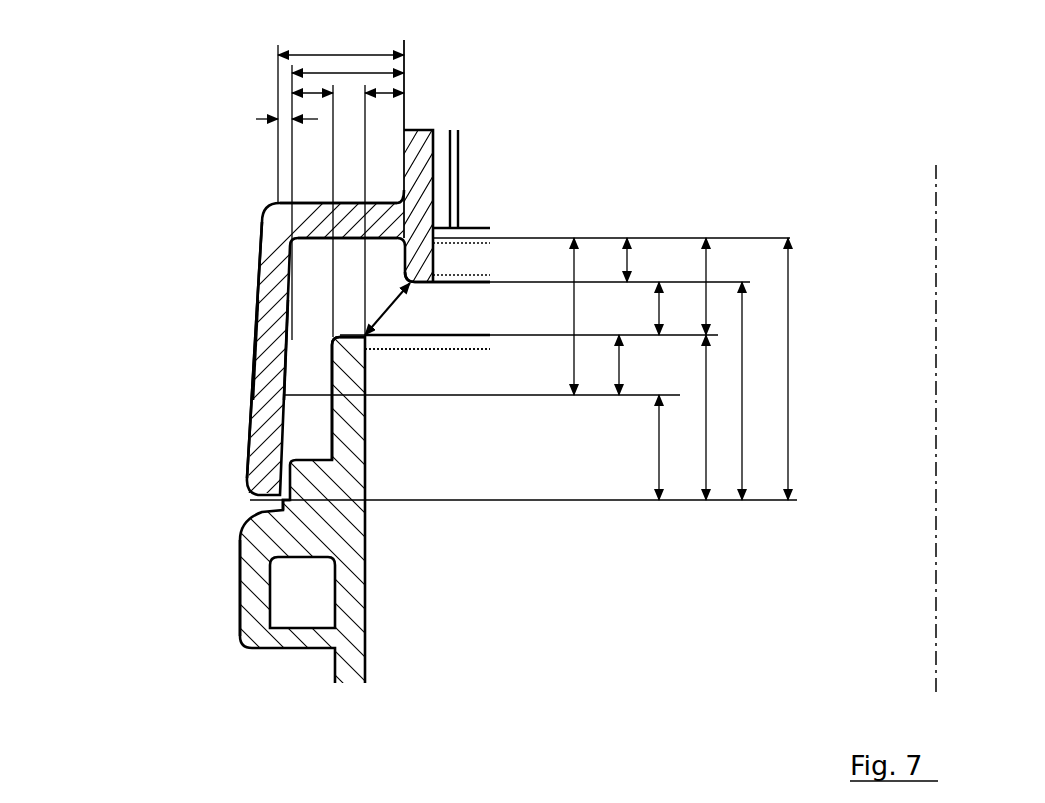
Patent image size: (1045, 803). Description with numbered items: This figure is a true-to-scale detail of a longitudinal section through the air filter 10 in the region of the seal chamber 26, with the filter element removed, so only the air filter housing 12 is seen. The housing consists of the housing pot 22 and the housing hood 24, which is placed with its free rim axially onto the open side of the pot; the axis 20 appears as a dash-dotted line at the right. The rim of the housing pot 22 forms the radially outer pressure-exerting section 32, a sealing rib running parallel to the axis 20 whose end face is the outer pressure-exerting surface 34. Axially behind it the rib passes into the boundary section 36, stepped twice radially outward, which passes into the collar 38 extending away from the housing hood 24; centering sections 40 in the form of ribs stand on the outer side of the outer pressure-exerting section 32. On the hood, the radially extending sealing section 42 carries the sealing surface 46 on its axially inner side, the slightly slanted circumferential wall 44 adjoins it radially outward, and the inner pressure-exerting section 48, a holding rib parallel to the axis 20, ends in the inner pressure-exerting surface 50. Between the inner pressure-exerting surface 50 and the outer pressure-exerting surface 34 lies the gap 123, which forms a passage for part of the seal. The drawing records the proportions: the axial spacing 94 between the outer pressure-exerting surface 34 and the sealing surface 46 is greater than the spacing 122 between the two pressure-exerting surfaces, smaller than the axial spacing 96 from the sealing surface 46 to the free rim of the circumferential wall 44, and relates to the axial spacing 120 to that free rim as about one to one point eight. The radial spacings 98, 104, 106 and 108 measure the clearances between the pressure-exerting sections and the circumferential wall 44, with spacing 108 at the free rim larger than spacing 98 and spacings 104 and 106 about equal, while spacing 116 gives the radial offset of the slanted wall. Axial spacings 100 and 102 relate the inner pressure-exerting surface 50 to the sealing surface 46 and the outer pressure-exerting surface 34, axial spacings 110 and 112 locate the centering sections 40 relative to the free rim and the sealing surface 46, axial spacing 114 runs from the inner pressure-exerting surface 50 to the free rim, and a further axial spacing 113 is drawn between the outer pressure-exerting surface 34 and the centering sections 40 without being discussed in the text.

The air filter 10 is at (88, 190).
The air filter housing 12 is at (250, 240).
The axis 20 is at (936, 650).
The housing pot 22 is at (347, 667).
The housing hood 24 is at (440, 165).
The seal chamber 26 is at (262, 329).
The outer pressure-exerting section 32 is at (340, 414).
The outer pressure-exerting surface 34 is at (352, 333).
The boundary section 36 is at (283, 500).
The collar 38 is at (253, 578).
The centering sections 40 is at (293, 428).
The sealing section 42 is at (312, 210).
The circumferential wall 44 is at (265, 392).
The sealing surface 46 is at (350, 243).
The inner pressure-exerting section 48 is at (440, 265).
The inner pressure-exerting surface 50 is at (417, 284).
The axial spacing 94 is at (710, 263).
The axial spacing 96 is at (792, 355).
The smallest spacing 98 is at (407, 65).
The axial spacing 100 is at (628, 262).
The axial spacing 102 is at (667, 303).
The spacing 104 is at (407, 84).
The smallest spacing 106 is at (290, 90).
The spacing 108 is at (332, 52).
The axial spacing 110 is at (657, 468).
The axial spacing 112 is at (578, 262).
The axial distance 113 is at (618, 378).
The axial spacing 114 is at (745, 470).
The spacing 116 is at (256, 119).
The axial spacing 120 is at (705, 470).
The spacing 122 is at (397, 305).
The gap 123 is at (393, 317).